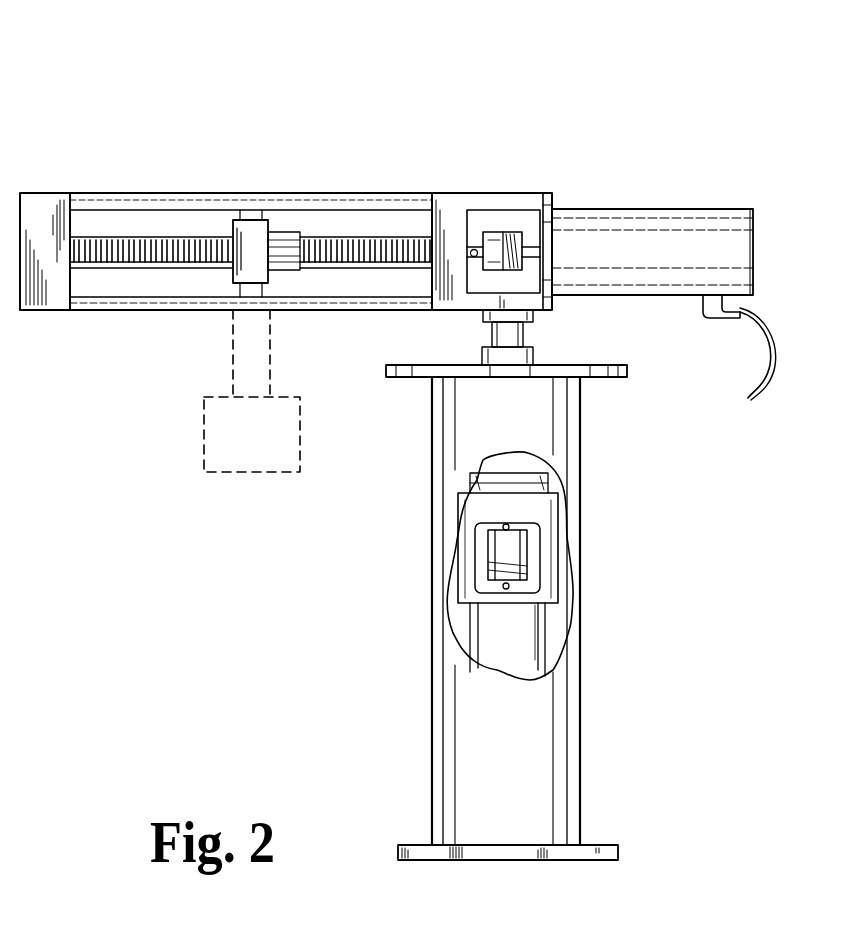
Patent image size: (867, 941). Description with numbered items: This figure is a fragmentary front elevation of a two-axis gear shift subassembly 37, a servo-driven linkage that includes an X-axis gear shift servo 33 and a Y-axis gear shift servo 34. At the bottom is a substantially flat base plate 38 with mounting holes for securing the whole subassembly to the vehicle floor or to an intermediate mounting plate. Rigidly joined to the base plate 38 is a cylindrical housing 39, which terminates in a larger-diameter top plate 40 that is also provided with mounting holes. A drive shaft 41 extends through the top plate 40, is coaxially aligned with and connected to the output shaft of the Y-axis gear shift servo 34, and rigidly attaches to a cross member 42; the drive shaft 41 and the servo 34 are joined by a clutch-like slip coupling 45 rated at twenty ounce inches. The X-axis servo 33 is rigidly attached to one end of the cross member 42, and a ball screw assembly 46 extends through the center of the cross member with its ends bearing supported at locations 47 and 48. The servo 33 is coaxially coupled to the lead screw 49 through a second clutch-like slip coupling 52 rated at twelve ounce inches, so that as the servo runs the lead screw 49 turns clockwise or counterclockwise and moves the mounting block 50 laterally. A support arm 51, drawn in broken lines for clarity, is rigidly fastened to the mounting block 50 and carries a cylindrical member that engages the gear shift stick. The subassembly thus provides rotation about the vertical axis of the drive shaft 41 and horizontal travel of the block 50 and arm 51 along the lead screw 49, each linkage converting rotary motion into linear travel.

The X-axis gear shift servo 33 is at (606, 214).
The Y-axis gear shift servo 34 is at (537, 633).
The two-axis gear shift subassembly 37 is at (615, 72).
The base plate 38 is at (593, 845).
The cylindrical housing 39 is at (582, 703).
The top plate 40 is at (628, 371).
The drive shaft 41 is at (513, 330).
The cross member 42 is at (452, 208).
The clutch-like slip coupling 45 is at (515, 546).
The ball screw assembly 46 is at (346, 238).
The bearing support location 47 is at (45, 225).
The bearing support location 48 is at (444, 312).
The lead screw 49 is at (150, 237).
The mounting block 50 is at (264, 230).
The support arm 51 is at (300, 444).
The clutch-like slip coupling 52 is at (494, 232).